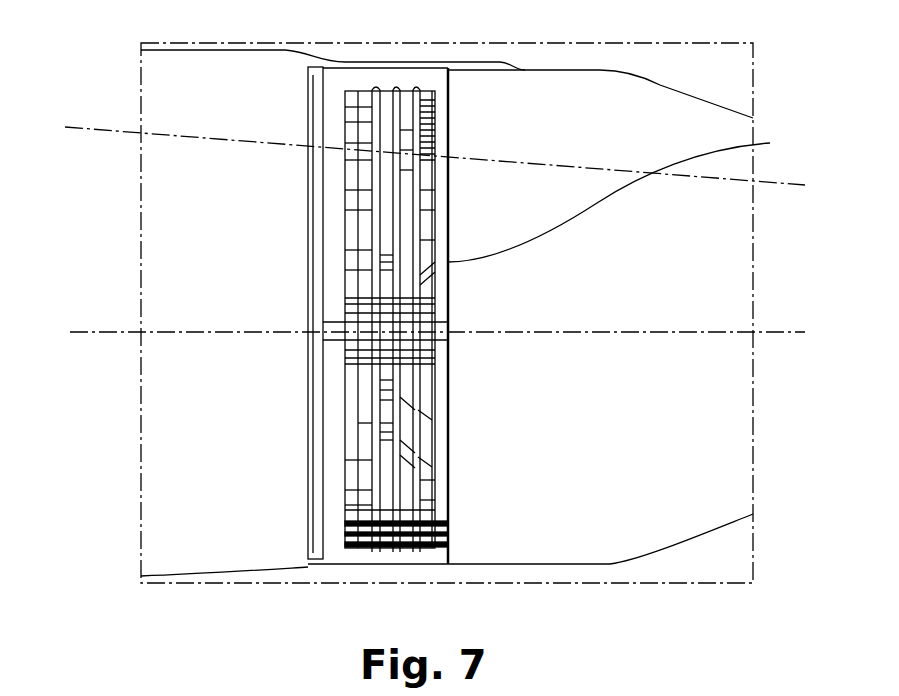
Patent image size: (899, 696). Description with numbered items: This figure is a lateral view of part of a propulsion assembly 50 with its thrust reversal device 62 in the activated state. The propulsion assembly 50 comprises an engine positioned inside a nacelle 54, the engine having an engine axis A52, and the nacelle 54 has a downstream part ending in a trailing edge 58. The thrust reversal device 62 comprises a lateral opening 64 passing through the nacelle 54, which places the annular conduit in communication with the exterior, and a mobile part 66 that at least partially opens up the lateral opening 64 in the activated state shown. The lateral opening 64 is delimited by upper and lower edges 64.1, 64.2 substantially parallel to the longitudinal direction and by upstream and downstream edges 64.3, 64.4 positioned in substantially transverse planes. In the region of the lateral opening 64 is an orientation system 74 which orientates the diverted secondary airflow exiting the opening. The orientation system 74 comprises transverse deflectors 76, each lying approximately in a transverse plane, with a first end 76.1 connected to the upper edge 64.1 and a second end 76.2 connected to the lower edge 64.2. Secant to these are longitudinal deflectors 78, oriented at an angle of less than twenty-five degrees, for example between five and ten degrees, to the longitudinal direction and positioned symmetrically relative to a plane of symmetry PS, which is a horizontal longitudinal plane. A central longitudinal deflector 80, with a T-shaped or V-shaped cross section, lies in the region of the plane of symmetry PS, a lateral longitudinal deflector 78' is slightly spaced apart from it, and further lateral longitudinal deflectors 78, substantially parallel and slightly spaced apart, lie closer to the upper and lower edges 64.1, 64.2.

The propulsion assembly 50 is at (118, 519).
The engine axis A52 is at (93, 331).
The nacelle 54 is at (556, 69).
The trailing edge 58 is at (753, 432).
The thrust reversal device 62 is at (318, 540).
The lateral opening 64 is at (376, 205).
The upper edge 64.1 is at (336, 78).
The lower edge 64.2 is at (338, 567).
The upstream edge 64.3 is at (333, 242).
The downstream edge 64.4 is at (635, 196).
The mobile part 66 is at (489, 106).
The orientation system 74 is at (355, 148).
The transverse deflector 76 is at (406, 488).
The first end 76.1 is at (374, 88).
The second end 76.2 is at (416, 553).
The longitudinal deflector 78 is at (371, 314).
The lateral longitudinal deflector 78' is at (218, 341).
The central longitudinal deflector 80 is at (343, 340).
The plane of symmetry PS is at (718, 331).